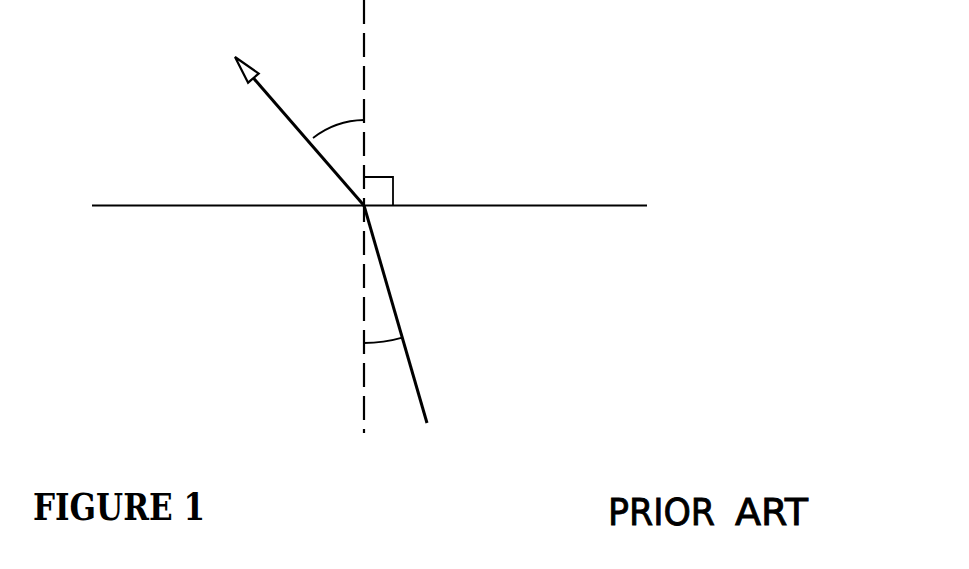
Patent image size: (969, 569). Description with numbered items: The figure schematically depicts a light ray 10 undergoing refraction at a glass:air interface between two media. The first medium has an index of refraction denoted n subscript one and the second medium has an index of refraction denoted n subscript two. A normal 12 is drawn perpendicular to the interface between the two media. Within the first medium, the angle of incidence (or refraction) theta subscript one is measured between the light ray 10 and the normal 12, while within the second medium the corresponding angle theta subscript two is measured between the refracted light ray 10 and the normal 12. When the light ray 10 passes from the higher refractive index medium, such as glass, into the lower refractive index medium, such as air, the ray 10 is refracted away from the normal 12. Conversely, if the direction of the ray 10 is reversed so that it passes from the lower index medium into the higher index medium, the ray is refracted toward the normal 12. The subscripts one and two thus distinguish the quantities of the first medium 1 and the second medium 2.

The light ray 10 is at (393, 290).
The normal 12 is at (367, 88).
The first medium (refractive index n1, angle of incidence theta1) 1 is at (318, 345).
The second medium (refractive index n2, angle of refraction theta2) 2 is at (416, 121).